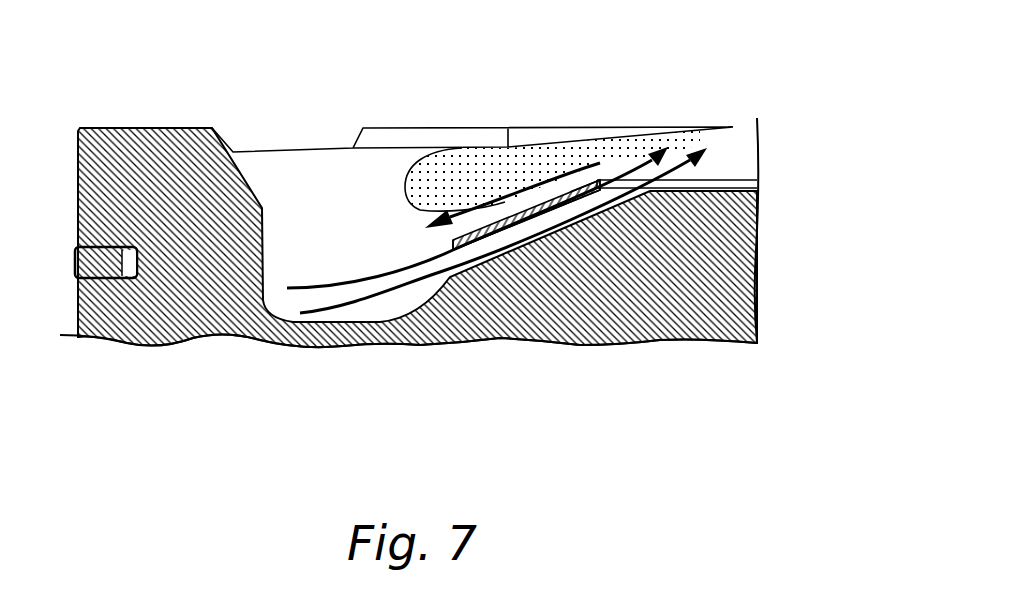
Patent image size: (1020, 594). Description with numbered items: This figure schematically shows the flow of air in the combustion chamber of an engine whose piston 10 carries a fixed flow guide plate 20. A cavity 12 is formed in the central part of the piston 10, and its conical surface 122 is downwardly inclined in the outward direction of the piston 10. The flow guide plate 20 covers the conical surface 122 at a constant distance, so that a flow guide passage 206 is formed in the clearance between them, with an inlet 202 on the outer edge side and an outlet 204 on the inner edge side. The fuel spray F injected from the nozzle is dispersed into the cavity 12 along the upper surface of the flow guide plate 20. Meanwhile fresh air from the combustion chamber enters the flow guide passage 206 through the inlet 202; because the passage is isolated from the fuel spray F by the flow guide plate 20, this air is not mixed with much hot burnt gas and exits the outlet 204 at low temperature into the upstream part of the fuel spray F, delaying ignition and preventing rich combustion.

The piston 10 is at (213, 90).
The cavity 12 is at (345, 263).
The flow guide plate 20 is at (523, 212).
The fuel spray F is at (557, 162).
The conical surface 122 is at (615, 200).
The inlet 202 is at (451, 253).
The outlet 204 is at (617, 190).
The flow guide passage 206 is at (535, 230).